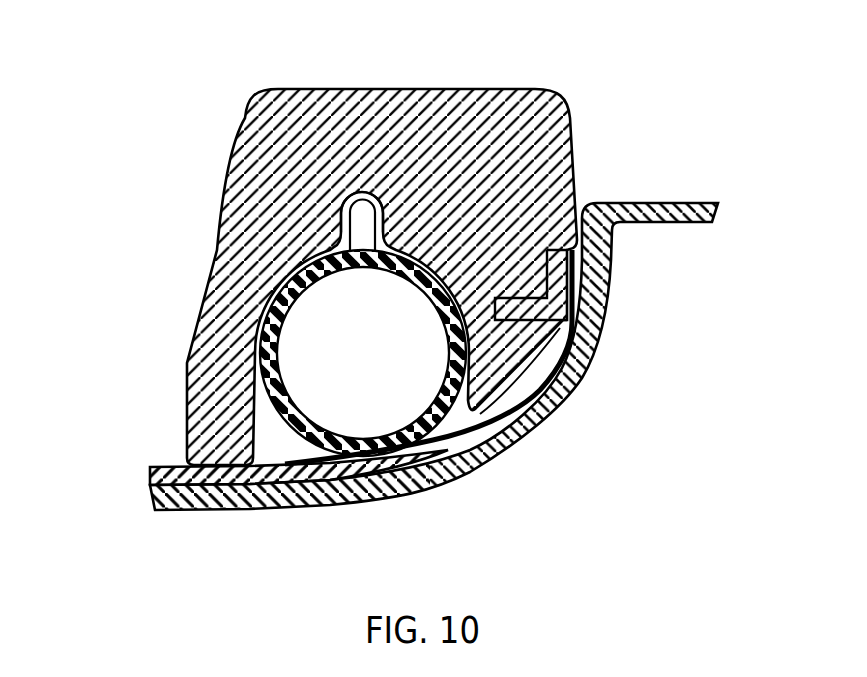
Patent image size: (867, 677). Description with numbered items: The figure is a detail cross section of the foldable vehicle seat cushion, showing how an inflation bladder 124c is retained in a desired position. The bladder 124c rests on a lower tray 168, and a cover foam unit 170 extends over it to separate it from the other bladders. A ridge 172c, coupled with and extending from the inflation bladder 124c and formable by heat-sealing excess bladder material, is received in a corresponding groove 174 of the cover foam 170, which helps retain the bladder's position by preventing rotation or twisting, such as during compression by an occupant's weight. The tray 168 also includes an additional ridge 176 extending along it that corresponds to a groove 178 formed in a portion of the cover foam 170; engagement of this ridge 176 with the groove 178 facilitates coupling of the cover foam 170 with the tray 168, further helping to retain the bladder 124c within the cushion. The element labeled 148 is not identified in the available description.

The frame 148 is at (590, 325).
The lower tray 168 is at (180, 466).
The cover foam unit 170 is at (524, 147).
The inflation bladder 124c is at (337, 443).
The ridge 172c is at (357, 222).
The groove 174 is at (356, 192).
The ridge 176 is at (517, 298).
The groove 178 is at (533, 363).